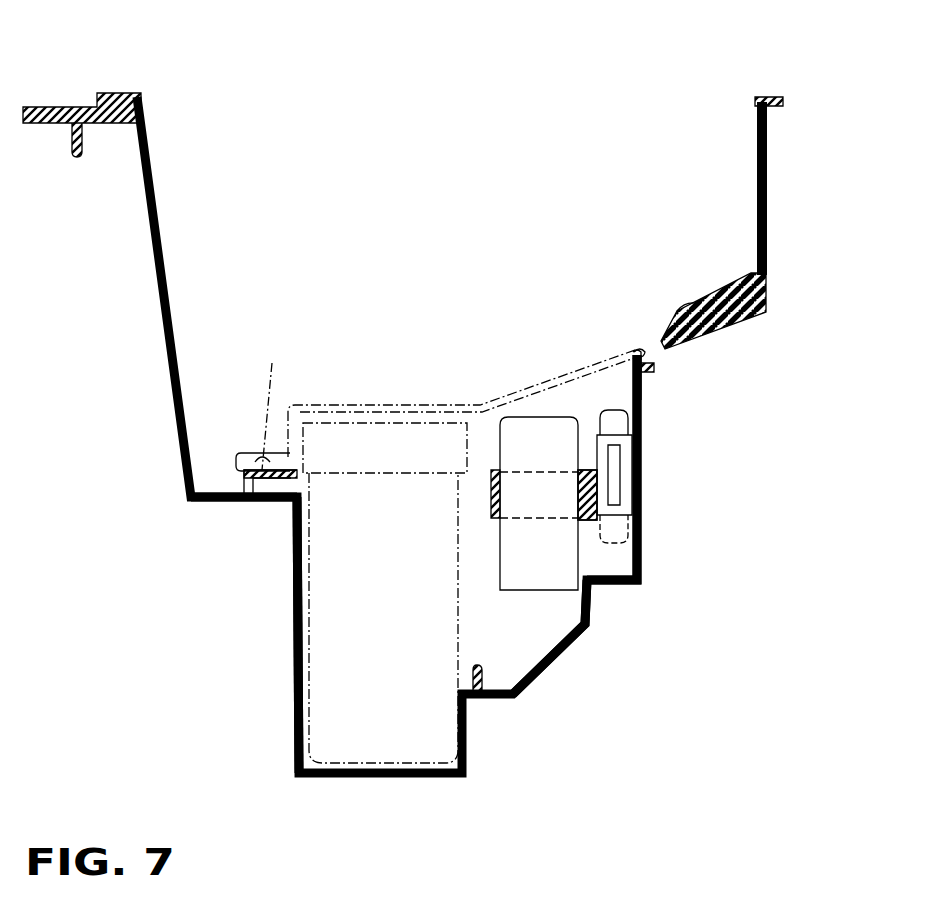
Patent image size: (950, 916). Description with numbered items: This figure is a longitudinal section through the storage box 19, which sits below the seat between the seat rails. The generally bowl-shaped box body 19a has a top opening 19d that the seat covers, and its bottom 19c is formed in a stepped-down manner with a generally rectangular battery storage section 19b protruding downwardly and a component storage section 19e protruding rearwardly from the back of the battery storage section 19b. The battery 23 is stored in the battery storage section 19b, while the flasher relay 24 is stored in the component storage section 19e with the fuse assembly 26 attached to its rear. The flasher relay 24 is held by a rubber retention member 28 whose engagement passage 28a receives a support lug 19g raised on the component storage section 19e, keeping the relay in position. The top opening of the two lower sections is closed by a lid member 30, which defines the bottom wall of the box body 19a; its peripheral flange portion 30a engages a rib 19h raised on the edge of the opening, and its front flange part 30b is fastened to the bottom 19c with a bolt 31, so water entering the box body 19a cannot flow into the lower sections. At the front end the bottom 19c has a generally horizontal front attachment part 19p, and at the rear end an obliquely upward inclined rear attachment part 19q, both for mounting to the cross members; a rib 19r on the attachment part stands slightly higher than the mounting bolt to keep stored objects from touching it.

The storage box 19 is at (158, 325).
The box body 19a is at (768, 205).
The battery storage section 19b is at (293, 631).
The bottom 19c is at (277, 504).
The top opening 19d is at (757, 99).
The component storage section 19e is at (593, 618).
The support lug 19g is at (592, 538).
The rib 19h is at (613, 362).
The front attachment part 19p is at (210, 507).
The rear attachment part 19q is at (730, 320).
The rib 19r is at (720, 287).
The battery 23 is at (458, 638).
The flasher relay 24 is at (552, 414).
The fuse assembly 26 is at (642, 406).
The rubber retention member 28 is at (491, 485).
The engagement passage 28a is at (578, 500).
The lid member 30 is at (340, 404).
The flange portion 30a is at (648, 342).
The front flange part 30b is at (240, 453).
The bolt 31 is at (271, 401).